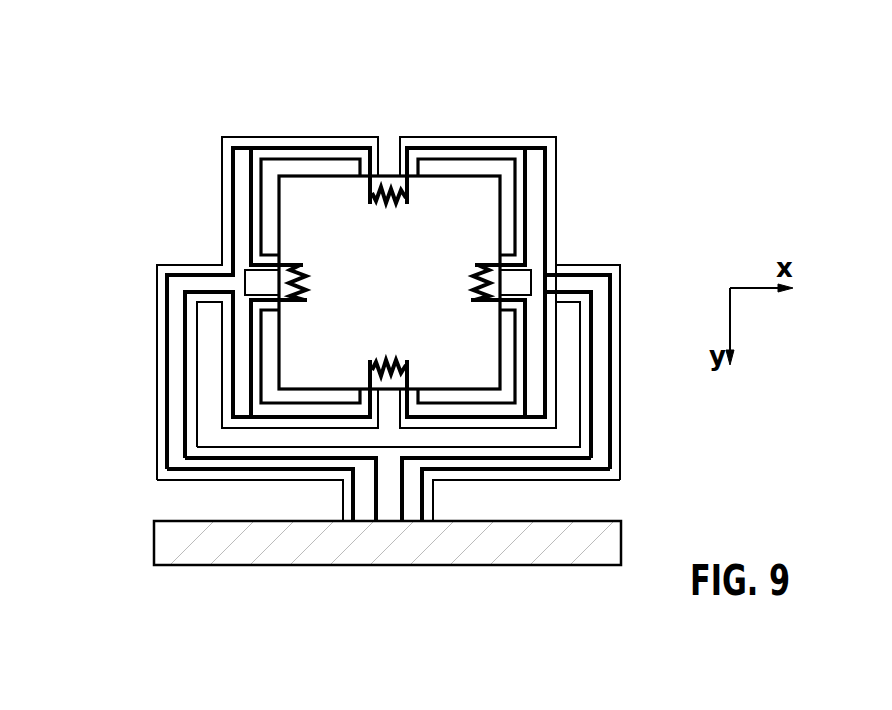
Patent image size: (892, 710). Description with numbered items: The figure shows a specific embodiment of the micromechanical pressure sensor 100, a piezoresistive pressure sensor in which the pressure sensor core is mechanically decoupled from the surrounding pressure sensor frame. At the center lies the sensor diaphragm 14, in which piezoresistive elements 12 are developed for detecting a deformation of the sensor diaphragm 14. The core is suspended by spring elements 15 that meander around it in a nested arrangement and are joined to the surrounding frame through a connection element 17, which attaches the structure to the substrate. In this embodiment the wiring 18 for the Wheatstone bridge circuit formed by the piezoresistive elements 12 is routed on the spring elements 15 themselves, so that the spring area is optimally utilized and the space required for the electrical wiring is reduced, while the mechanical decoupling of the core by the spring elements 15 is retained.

The piezoresistive elements 12 is at (372, 203).
The sensor diaphragm 14 is at (405, 303).
The spring element 15 is at (447, 136).
The connection element 17 is at (434, 498).
The wiring 18 is at (166, 398).
The micromechanical pressure sensor 100 is at (117, 536).